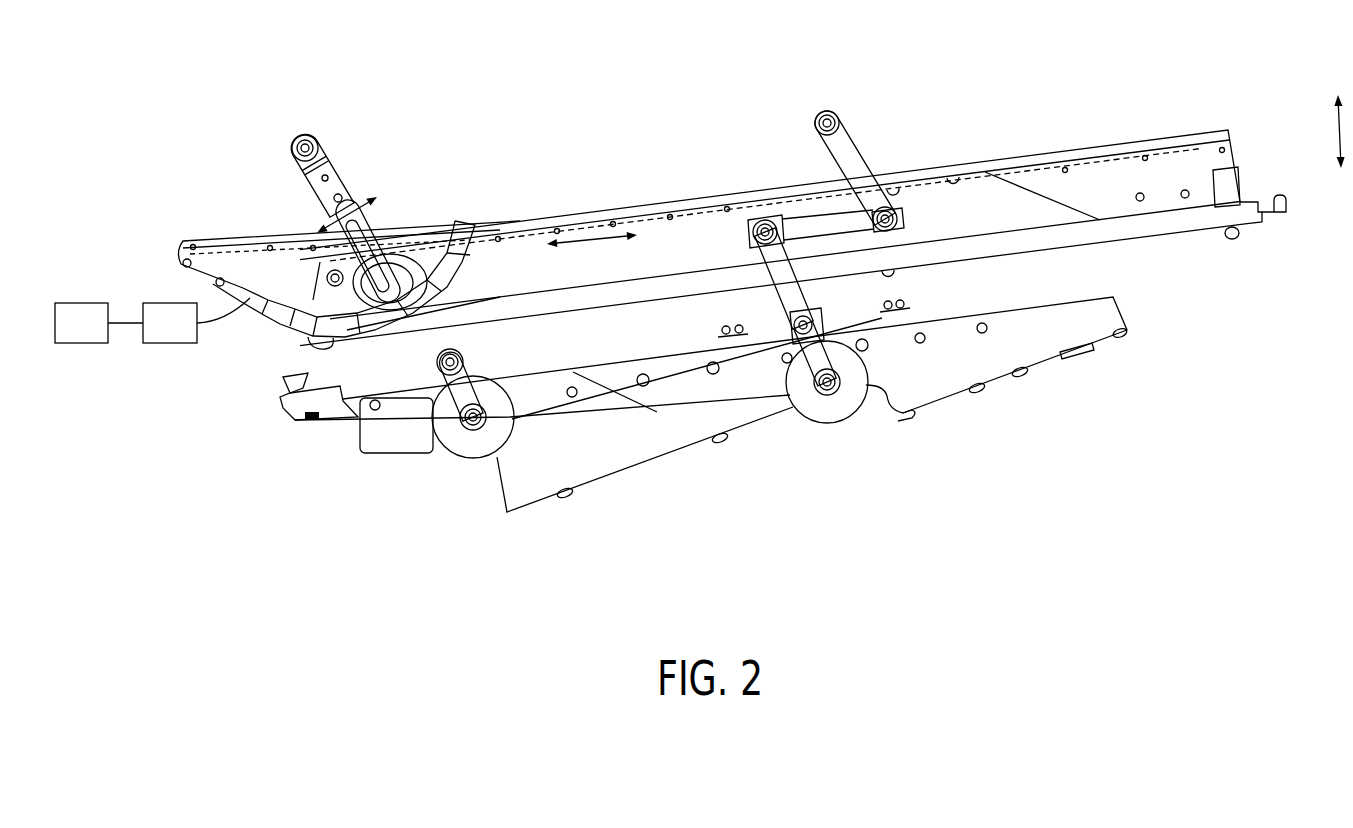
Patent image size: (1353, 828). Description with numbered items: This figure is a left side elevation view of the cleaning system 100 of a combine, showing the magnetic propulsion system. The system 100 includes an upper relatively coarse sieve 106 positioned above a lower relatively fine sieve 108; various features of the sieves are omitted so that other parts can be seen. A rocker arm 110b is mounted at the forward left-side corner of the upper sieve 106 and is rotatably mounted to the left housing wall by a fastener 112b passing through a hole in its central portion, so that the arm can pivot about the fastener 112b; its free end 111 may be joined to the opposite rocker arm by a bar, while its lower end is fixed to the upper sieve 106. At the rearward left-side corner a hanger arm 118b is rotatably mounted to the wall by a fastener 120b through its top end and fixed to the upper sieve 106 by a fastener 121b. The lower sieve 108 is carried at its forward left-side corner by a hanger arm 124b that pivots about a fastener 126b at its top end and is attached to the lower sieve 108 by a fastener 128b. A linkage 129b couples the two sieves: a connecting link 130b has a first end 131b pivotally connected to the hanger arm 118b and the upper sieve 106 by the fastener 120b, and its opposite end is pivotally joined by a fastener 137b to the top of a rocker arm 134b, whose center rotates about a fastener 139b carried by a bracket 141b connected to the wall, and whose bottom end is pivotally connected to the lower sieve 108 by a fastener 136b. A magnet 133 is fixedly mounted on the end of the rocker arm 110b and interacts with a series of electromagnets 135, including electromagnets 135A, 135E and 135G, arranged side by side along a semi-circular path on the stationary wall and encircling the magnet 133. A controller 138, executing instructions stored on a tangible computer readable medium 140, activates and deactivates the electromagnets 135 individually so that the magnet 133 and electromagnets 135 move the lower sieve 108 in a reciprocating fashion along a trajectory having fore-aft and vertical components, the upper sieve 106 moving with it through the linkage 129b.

The cleaning system 100 is at (1140, 125).
The upper relatively coarse sieve 106 is at (1237, 158).
The lower relatively fine sieve 108 is at (1125, 318).
The rocker arm 110b is at (336, 160).
The free end 111 is at (300, 138).
The fastener 112b is at (351, 198).
The hanger arm 118b is at (853, 163).
The fastener 120b is at (822, 109).
The fastener 121b is at (898, 208).
The hanger arm 124b is at (437, 421).
The fastener 126b is at (437, 368).
The fastener 128b is at (462, 432).
The linkage 129b is at (747, 212).
The connecting link 130b is at (826, 214).
The first end 131b is at (905, 212).
The magnet 133 is at (360, 335).
The rocker arm 134b is at (860, 358).
The electromagnets 135 is at (455, 233).
The electromagnet 135A is at (262, 293).
The electromagnet 135E is at (400, 333).
The electromagnet 135G is at (482, 244).
The fastener 136b is at (827, 397).
The fastener 137b is at (757, 222).
The controller 138 is at (177, 345).
The fastener 139b is at (648, 403).
The tangible computer readable medium 140 is at (83, 343).
The bracket 141b is at (893, 307).